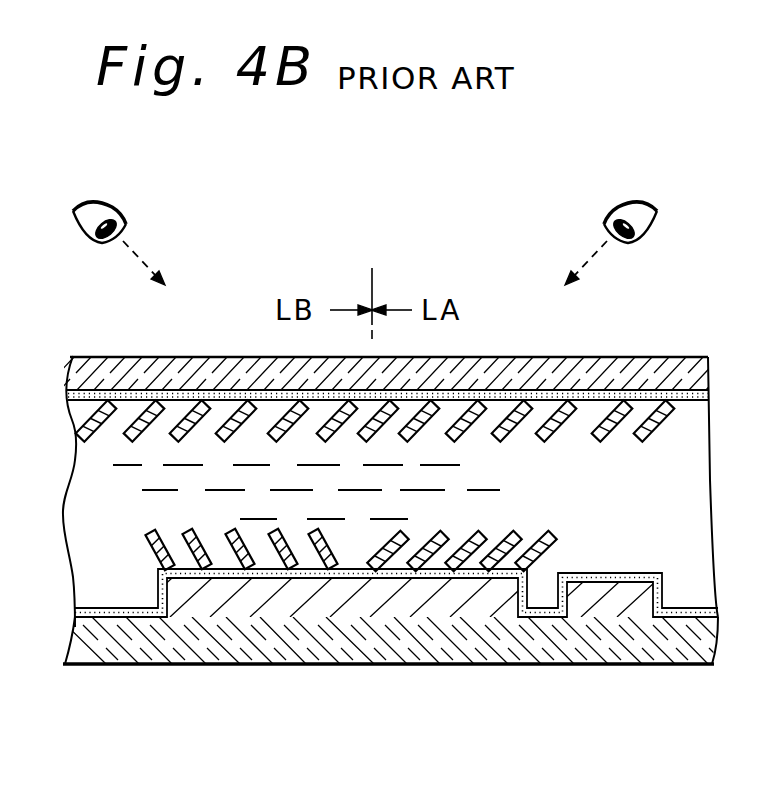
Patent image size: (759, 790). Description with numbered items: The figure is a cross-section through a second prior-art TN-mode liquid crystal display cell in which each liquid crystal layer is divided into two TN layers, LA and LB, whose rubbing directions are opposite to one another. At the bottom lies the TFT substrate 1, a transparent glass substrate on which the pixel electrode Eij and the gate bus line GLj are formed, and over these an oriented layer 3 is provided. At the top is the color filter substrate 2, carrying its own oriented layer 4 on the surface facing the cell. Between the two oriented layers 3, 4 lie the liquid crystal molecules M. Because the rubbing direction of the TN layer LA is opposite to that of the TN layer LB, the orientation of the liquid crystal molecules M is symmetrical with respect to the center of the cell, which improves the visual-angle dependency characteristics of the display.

The TFT substrate 1 is at (718, 640).
The color filter substrate 2 is at (709, 375).
The oriented layer 3 is at (718, 617).
The oriented layer 4 is at (709, 400).
The liquid crystal molecules M is at (597, 442).
The pixel electrode Eij is at (227, 610).
The gate bus line GLj is at (590, 580).